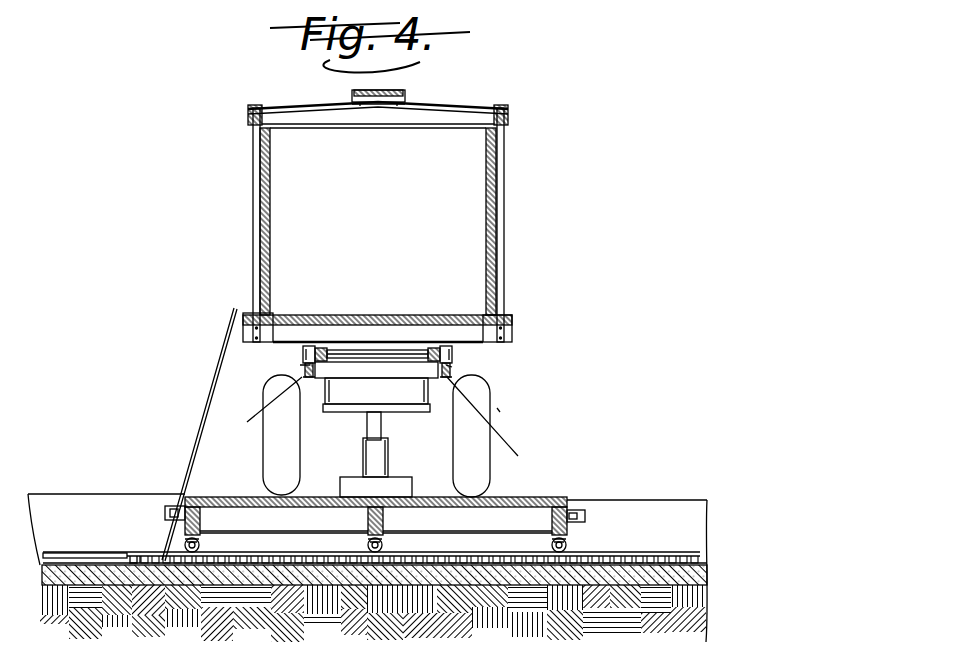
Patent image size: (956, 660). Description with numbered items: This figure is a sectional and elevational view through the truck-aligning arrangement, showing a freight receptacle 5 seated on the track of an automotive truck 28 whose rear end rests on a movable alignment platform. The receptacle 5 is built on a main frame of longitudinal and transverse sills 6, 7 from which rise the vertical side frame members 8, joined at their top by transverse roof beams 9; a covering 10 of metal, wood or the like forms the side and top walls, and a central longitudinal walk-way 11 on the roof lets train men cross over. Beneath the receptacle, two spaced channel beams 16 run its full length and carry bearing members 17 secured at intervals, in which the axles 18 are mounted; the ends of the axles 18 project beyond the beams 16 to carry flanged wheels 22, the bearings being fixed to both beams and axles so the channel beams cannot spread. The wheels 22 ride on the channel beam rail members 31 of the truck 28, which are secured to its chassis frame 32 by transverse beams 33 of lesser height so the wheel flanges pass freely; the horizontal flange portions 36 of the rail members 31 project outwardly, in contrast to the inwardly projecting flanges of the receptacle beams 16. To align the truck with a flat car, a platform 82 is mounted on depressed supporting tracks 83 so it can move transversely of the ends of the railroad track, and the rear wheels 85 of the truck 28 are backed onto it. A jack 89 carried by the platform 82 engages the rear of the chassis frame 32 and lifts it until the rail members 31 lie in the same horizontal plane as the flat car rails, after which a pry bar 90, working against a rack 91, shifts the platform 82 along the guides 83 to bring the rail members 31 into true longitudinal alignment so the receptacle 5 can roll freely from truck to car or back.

The receptacle 5 is at (505, 193).
The longitudinal sills 6 is at (512, 322).
The transverse sills 7 is at (467, 336).
The vertical side frame members 8 is at (458, 196).
The transverse roof beams 9 is at (366, 112).
The covering 10 is at (578, 244).
The central longitudinal walk-way 11 is at (406, 95).
The channel beams 16 is at (446, 346).
The bearing members 17 is at (434, 350).
The axles 18 is at (370, 351).
The flanged wheels 22 is at (500, 378).
The truck 28 is at (497, 410).
The channel beam rail members 31 is at (387, 425).
The chassis frame 32 is at (428, 392).
The transverse beams 33 is at (404, 374).
The horizontal flange portions 36 is at (302, 371).
The platform 82 is at (543, 497).
The supporting tracks 83 is at (606, 556).
The rear wheels 85 is at (470, 474).
The jack 89 is at (374, 448).
The pry bar 90 is at (232, 378).
The rack 91 is at (152, 556).